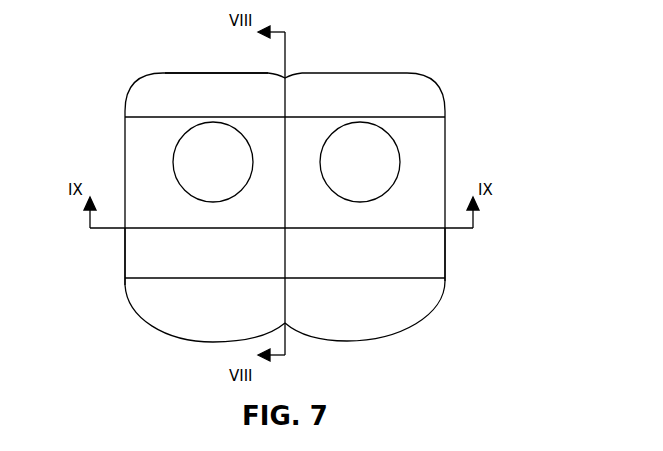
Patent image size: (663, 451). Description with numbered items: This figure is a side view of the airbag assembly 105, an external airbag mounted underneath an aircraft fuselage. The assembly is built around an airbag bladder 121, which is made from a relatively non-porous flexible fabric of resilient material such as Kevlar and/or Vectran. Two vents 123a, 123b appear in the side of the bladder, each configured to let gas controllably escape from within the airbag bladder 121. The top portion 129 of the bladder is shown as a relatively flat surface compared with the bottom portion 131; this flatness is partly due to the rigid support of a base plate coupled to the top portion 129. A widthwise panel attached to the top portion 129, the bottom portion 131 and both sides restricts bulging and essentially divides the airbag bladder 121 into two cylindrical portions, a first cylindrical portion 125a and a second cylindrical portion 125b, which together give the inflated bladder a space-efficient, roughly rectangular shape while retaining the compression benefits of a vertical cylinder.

The airbag assembly 105 is at (75, 320).
The airbag bladder 121 is at (445, 166).
The vent 123a is at (397, 140).
The vent 123b is at (173, 160).
The first cylindrical portion 125a is at (445, 250).
The second cylindrical portion 125b is at (125, 245).
The top portion 129 is at (336, 73).
The bottom portion 131 is at (347, 341).